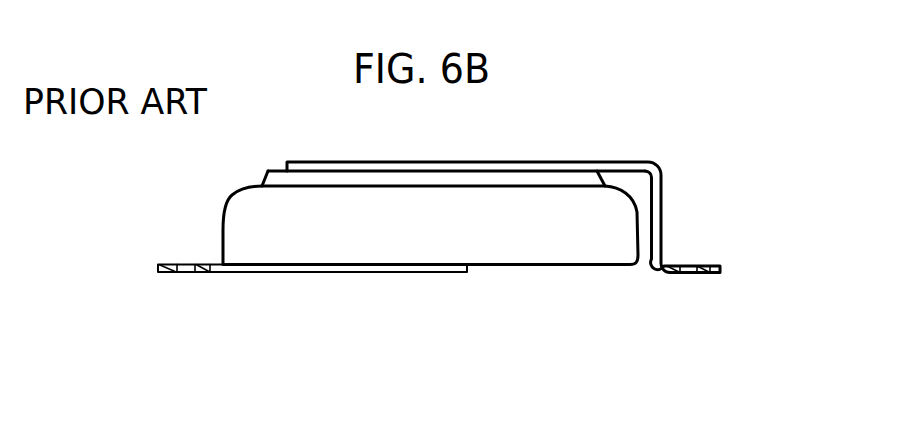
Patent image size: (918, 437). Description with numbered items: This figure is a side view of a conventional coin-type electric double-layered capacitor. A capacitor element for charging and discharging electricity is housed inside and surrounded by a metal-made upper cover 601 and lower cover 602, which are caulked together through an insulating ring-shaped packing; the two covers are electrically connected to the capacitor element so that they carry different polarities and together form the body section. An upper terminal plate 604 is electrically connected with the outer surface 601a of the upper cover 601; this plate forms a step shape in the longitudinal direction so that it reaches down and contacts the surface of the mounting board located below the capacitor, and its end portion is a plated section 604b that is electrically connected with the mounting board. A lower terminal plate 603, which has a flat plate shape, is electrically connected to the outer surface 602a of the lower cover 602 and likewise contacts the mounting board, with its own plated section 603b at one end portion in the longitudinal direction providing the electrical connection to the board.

The upper cover 601 is at (282, 177).
The outer surface of upper cover 601a is at (515, 171).
The lower cover 602 is at (542, 250).
The outer surface of lower cover 602a is at (370, 265).
The lower terminal plate 603 is at (292, 270).
The plated section of lower terminal plate 603b is at (160, 273).
The upper terminal plate 604 is at (657, 200).
The plated section of upper terminal plate 604b is at (712, 273).